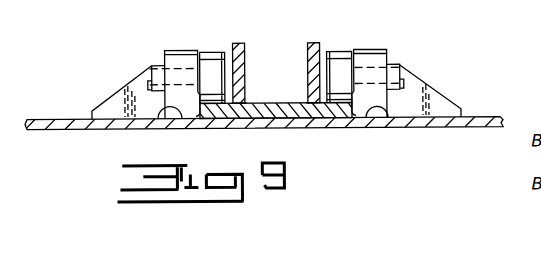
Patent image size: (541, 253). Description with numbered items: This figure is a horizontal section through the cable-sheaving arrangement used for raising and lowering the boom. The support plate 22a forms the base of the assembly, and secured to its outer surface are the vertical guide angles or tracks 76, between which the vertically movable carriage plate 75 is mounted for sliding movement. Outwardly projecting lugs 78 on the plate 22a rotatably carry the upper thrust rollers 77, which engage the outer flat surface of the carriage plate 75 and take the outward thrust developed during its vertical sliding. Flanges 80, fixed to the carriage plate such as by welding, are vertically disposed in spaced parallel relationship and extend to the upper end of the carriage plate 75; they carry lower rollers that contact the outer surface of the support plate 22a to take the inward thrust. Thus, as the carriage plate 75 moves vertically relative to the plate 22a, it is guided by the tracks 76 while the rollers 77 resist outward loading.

The support plate 22a is at (445, 128).
The carriage plate 75 is at (257, 103).
The vertical guide angles or tracks 76 is at (168, 116).
The upper thrust rollers 77 is at (213, 52).
The outwardly projecting lugs 78 is at (172, 50).
The flanges 80 is at (311, 43).